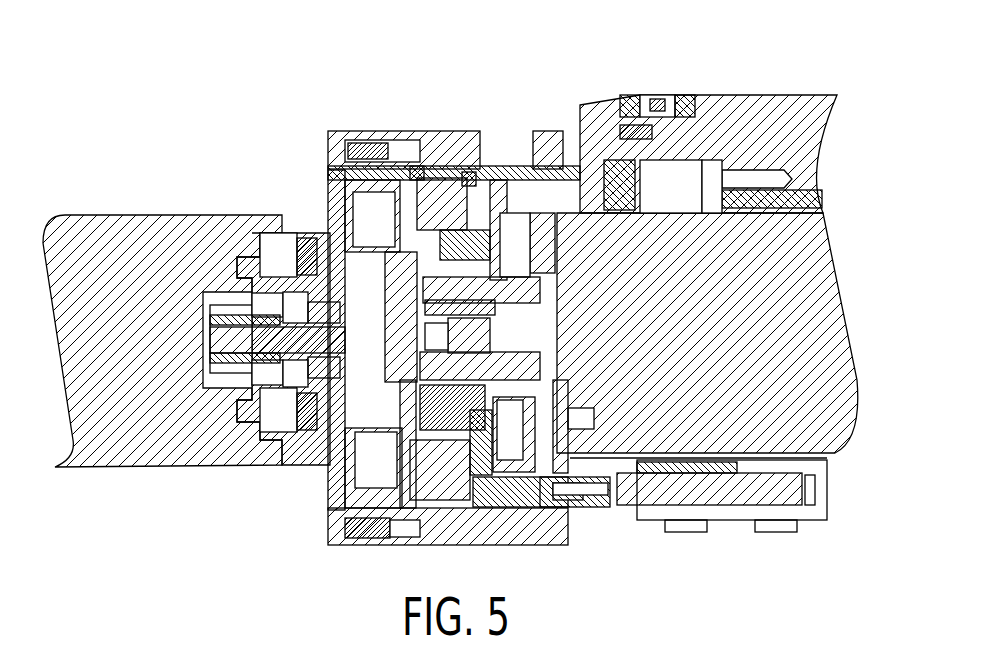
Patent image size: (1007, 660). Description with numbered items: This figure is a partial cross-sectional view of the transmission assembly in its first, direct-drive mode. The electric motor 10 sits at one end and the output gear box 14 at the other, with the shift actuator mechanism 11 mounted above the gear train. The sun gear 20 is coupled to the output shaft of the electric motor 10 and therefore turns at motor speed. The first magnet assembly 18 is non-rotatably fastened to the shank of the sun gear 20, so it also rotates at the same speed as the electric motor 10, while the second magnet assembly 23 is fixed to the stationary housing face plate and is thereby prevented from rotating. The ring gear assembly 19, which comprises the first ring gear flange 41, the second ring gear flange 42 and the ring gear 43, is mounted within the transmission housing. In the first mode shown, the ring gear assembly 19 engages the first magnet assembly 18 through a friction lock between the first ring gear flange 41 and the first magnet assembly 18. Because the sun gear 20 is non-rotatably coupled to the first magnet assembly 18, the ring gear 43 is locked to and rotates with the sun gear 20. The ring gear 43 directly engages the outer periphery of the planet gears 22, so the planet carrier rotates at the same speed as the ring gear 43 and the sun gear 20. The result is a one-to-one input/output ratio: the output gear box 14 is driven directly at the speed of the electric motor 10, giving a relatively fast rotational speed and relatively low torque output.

The electric motor 10 is at (822, 288).
The shift actuator mechanism 11 is at (818, 150).
The output gear box 14 is at (123, 455).
The first magnet assembly 18 is at (512, 233).
The ring gear assembly 19 is at (458, 465).
The sun gear 20 is at (480, 358).
The planet gear 22 is at (456, 287).
The second magnet assembly 23 is at (370, 462).
The first ring gear flange 41 is at (470, 180).
The second ring gear flange 42 is at (417, 175).
The ring gear 43 is at (448, 455).